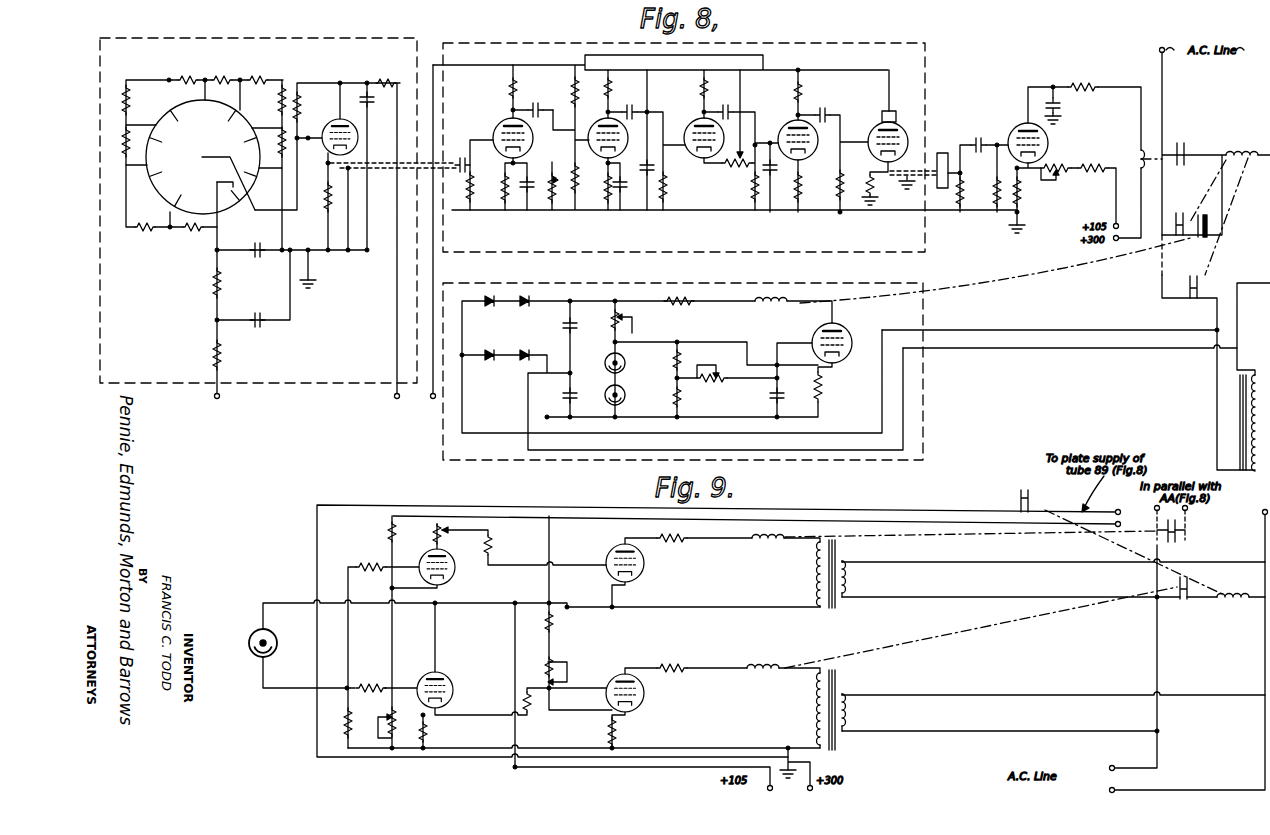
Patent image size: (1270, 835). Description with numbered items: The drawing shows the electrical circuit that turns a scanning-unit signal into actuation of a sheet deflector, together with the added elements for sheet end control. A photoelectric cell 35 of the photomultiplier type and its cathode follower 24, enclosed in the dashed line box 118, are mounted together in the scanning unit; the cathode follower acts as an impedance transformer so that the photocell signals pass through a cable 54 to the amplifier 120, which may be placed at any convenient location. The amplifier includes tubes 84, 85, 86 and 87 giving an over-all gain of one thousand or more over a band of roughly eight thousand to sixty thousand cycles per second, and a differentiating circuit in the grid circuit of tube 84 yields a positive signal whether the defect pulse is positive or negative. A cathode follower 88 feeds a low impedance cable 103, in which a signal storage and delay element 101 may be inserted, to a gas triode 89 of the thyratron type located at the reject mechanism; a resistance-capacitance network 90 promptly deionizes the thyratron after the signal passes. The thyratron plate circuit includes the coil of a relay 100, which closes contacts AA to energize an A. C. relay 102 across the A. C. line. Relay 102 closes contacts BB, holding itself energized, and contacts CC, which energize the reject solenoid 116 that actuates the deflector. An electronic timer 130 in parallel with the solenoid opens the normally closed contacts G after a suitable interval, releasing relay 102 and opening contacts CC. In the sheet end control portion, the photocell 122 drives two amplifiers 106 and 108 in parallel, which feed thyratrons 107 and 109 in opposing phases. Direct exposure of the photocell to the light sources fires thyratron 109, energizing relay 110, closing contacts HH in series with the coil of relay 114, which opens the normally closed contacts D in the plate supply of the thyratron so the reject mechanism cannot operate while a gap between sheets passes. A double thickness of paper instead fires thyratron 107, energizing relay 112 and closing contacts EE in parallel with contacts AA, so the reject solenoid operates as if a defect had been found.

In FIG. 8, the dashed line box 118 is at (320, 40).
In FIG. 8, the amplifier 120 is at (835, 44).
In FIG. 8, the electronic timer 130 is at (918, 287).
In FIG. 8, the cathode follower 24 is at (335, 122).
In FIG. 8, the photoelectric cell 35 is at (195, 157).
In FIG. 8, the cable 54 is at (382, 170).
In FIG. 8, the tube 84 is at (501, 124).
In FIG. 8, the tube 85 is at (607, 129).
In FIG. 8, the tube 86 is at (698, 129).
In FIG. 8, the tube 87 is at (792, 131).
In FIG. 8, the cathode follower 88 is at (880, 132).
In FIG. 8, the gas triode 89 is at (1049, 149).
In FIG. 8, the resistance-capacitance network 90 is at (1065, 99).
In FIG. 8, the relay 100 is at (1139, 151).
In FIG. 8, the signal storage and delay element 101 is at (942, 152).
In FIG. 8, the low impedance cable 103 is at (928, 172).
In FIG. 8, the A. C. relay 102 is at (1246, 140).
In FIG. 8, the reject solenoid 116 is at (1259, 370).
In FIG. 8, the contacts AA is at (1187, 149).
In FIG. 8, the contacts BB is at (1177, 218).
In FIG. 8, the contacts CC is at (1178, 282).
In FIG. 8, the normally closed contacts G is at (1214, 236).
In FIG. 9, the amplifier 106 is at (451, 569).
In FIG. 9, the thyratron 107 is at (639, 563).
In FIG. 9, the amplifier 108 is at (451, 690).
In FIG. 9, the thyratron 109 is at (645, 697).
In FIG. 9, the relay 110 is at (766, 662).
In FIG. 9, the relay 112 is at (780, 542).
In FIG. 9, the relay 114 is at (1232, 602).
In FIG. 9, the sheet end control photocell 122 is at (273, 650).
In FIG. 9, the normally closed contacts D is at (1034, 508).
In FIG. 9, the contacts EE is at (1177, 540).
In FIG. 9, the contacts HH is at (1179, 601).